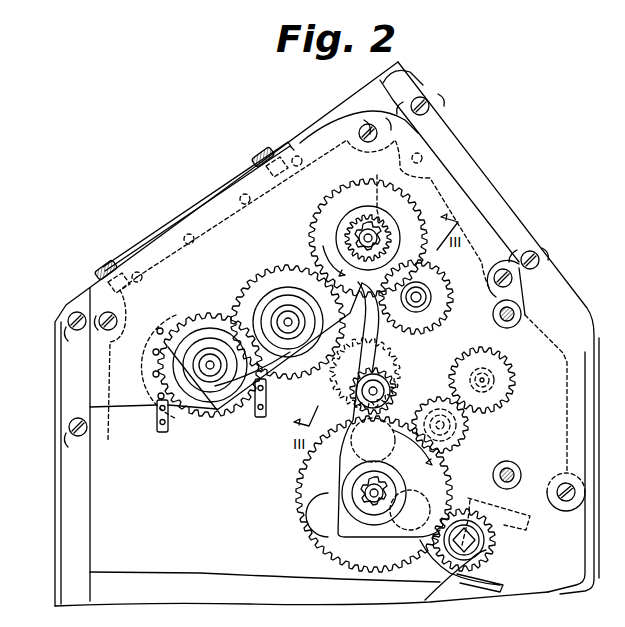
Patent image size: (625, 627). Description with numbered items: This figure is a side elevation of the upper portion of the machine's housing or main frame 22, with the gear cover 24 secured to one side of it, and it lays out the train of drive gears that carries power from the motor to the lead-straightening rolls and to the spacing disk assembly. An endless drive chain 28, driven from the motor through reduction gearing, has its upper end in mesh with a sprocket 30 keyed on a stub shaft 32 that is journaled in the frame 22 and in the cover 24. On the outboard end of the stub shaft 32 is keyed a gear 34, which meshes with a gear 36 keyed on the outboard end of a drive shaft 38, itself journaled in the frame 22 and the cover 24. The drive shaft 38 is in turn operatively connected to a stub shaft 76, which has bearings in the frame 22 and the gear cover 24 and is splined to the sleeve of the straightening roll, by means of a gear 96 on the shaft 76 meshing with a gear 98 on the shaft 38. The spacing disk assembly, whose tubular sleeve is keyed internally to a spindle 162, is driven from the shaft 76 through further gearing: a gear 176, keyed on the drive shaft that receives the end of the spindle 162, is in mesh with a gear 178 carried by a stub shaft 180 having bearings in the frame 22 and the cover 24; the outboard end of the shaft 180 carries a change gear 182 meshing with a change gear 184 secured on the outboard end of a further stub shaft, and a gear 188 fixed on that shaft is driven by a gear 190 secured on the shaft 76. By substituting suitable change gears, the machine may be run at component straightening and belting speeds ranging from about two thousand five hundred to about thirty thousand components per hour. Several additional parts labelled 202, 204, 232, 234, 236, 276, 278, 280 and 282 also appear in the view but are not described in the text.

The main frame 22 is at (55, 518).
The gear cover 24 is at (138, 573).
The endless drive chain 28 is at (166, 431).
The sprocket 30 is at (200, 419).
The stub shaft 32 is at (247, 420).
The gear 34 is at (203, 312).
The gear 36 is at (246, 291).
The drive shaft 38 is at (310, 318).
The stub shaft 76 is at (364, 212).
The gear 96 is at (331, 197).
The gear 98 is at (302, 257).
The spindle 162 is at (386, 487).
The gear 176 is at (298, 519).
The gear 178 is at (360, 388).
The stub shaft 180 is at (347, 397).
The change gear 182 is at (438, 354).
The change gear 184 is at (493, 315).
The gear 188 is at (455, 300).
The gear 190 is at (378, 191).
The gear 202 is at (498, 380).
The gear 204 is at (476, 436).
The pinion 232 is at (471, 426).
The pinion 234 is at (514, 397).
The gear 236 is at (339, 340).
The bracket 276 is at (530, 529).
The spring 278 is at (447, 560).
The gear 280 is at (500, 548).
The lever 282 is at (455, 582).